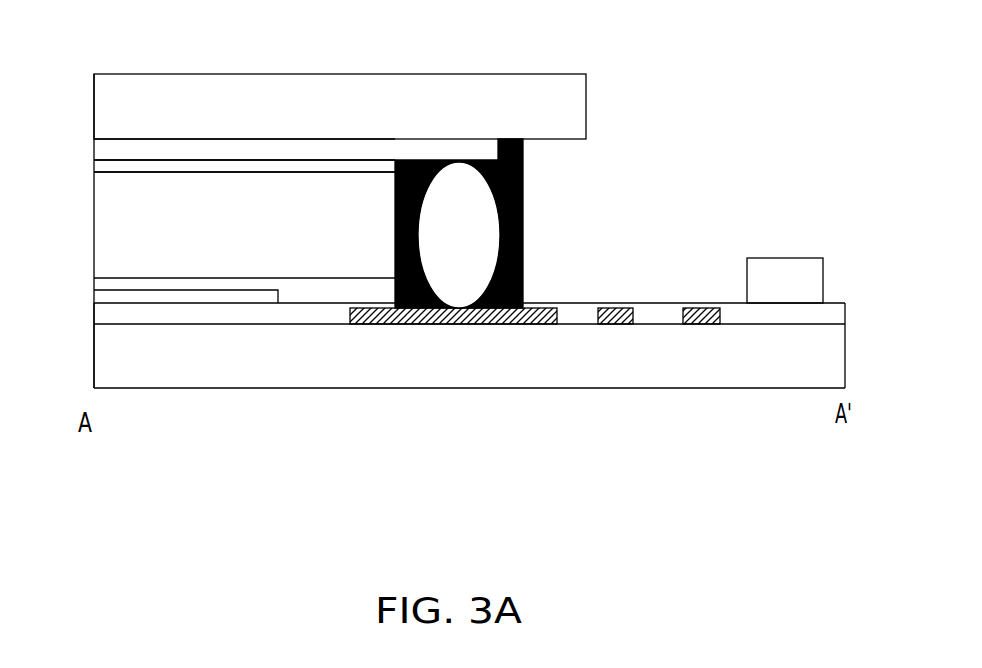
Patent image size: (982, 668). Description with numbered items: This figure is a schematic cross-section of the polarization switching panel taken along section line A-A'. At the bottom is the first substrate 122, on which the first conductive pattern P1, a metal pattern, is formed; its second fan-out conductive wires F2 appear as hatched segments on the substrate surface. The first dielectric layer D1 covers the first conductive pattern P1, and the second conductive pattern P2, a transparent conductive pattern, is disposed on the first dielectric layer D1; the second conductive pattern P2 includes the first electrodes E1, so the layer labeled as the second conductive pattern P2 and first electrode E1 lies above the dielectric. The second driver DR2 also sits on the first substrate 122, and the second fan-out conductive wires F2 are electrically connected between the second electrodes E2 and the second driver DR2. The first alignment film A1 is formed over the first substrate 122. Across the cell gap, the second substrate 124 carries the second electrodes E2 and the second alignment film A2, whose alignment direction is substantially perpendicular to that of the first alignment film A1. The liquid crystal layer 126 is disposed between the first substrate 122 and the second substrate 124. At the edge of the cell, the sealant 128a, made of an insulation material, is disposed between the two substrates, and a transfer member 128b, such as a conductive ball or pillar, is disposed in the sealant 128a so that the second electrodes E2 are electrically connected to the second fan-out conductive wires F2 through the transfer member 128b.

The first substrate 122 is at (492, 370).
The second substrate 124 is at (357, 120).
The liquid crystal layer 126 is at (125, 224).
The sealant 128a is at (524, 203).
The transfer member 128b is at (481, 245).
The first dielectric layer D1 is at (305, 316).
The second electrode E2 is at (108, 150).
The second alignment film A2 is at (108, 166).
The first alignment film A1 is at (108, 284).
The second conductive pattern P2 is at (186, 369).
The first electrode E1 is at (225, 300).
The first conductive pattern P1 is at (535, 378).
The second fan-out conductive wire F2 is at (697, 324).
The second driver DR2 is at (785, 280).